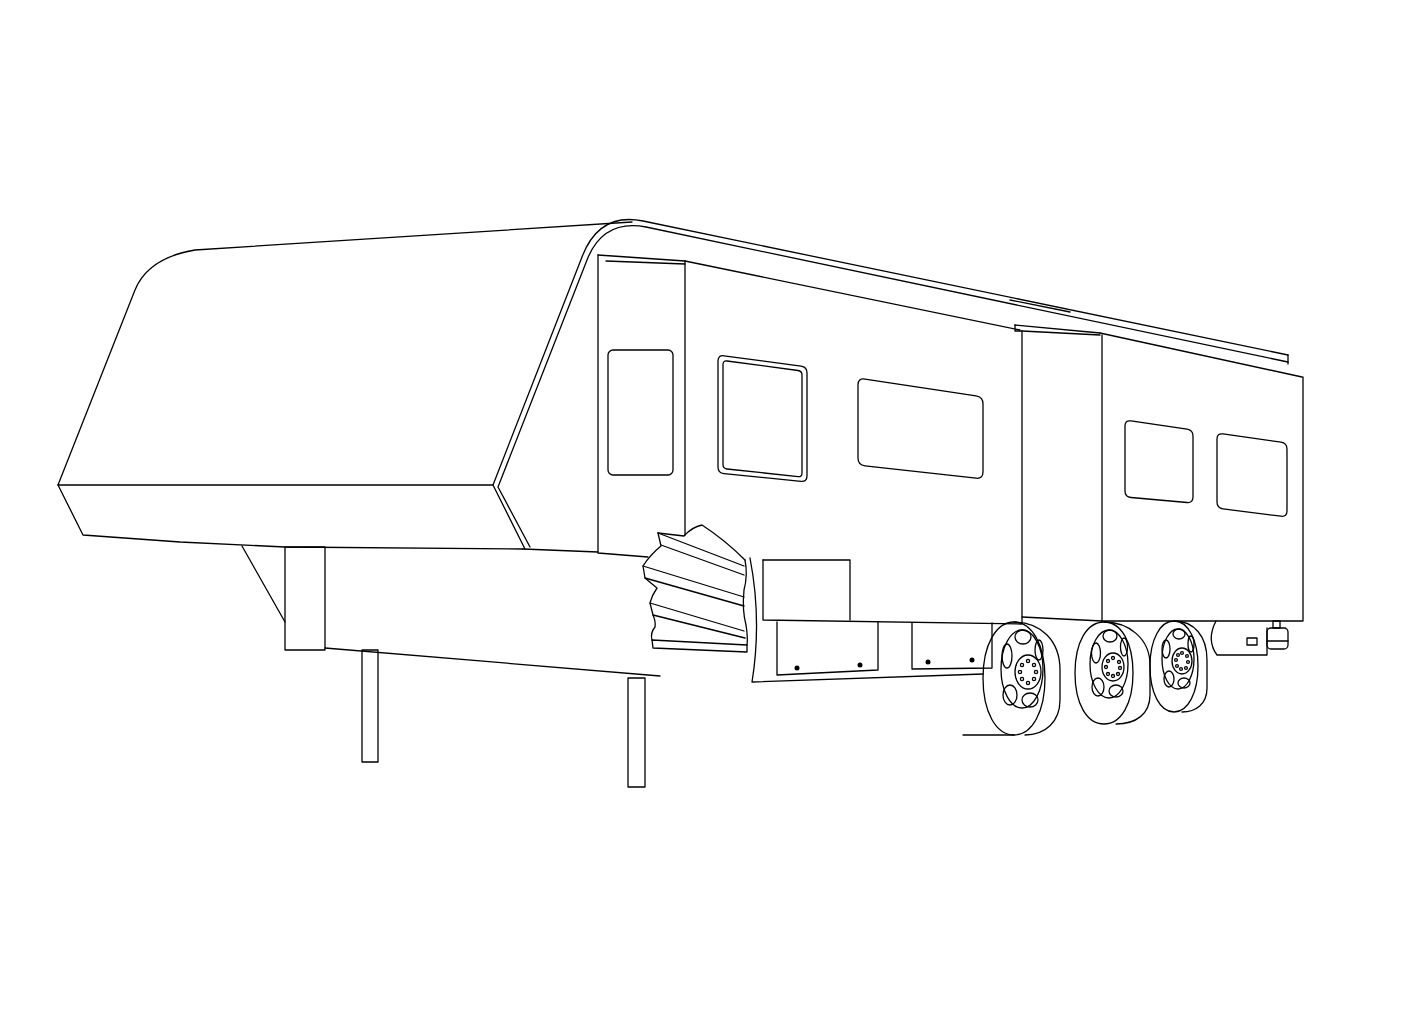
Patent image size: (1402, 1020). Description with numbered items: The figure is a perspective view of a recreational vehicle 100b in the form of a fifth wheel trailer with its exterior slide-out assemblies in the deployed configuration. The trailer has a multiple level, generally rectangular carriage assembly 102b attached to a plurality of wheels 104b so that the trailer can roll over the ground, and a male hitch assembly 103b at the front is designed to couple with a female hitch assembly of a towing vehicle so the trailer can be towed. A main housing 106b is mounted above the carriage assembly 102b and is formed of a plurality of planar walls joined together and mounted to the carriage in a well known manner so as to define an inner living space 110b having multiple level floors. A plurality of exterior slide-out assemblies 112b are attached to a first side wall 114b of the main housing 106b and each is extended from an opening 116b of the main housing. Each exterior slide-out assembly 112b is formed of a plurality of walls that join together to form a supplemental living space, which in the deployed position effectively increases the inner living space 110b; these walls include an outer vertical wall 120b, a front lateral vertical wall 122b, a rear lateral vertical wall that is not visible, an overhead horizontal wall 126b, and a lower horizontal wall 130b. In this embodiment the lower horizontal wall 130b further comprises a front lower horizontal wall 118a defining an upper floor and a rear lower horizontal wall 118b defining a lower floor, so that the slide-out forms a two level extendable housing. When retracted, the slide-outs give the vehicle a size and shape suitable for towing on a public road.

The recreational vehicle 100b is at (1107, 135).
The carriage assembly 102b is at (694, 650).
The male hitch assembly 103b is at (307, 650).
The wheels 104b is at (998, 737).
The main housing 106b is at (750, 242).
The inner living space 110b is at (927, 583).
The exterior slide-out assembly 112b is at (933, 327).
The first side wall 114b is at (1018, 324).
The opening 116b is at (612, 258).
The front lower horizontal wall 118a is at (755, 683).
The rear lower horizontal wall 118b is at (908, 618).
The outer vertical wall 120b is at (973, 563).
The front lateral vertical wall 122b is at (613, 304).
The overhead horizontal wall 126b is at (815, 283).
The lower horizontal wall 130b is at (865, 625).